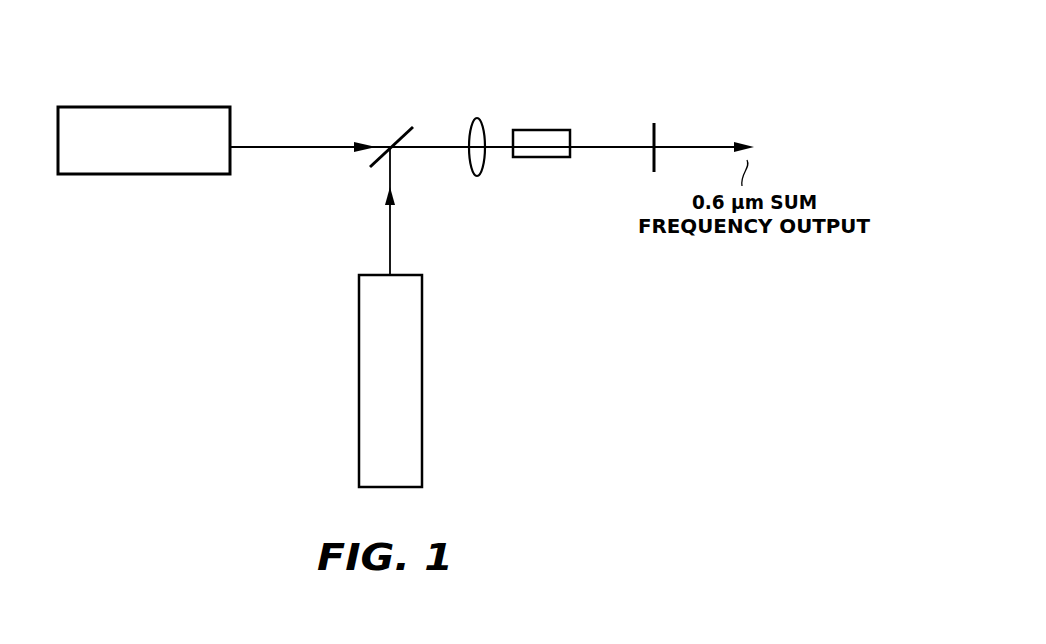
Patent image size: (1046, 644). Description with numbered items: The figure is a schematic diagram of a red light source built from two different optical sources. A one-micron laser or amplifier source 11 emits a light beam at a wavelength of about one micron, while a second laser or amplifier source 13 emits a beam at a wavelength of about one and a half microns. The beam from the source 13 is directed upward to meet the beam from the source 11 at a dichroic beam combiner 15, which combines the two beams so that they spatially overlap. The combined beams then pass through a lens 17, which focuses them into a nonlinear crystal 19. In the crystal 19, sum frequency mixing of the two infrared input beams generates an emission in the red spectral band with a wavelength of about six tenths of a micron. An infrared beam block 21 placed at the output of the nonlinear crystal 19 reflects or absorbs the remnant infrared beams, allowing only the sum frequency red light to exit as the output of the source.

The 1-micron laser or amplifier source 11 is at (130, 107).
The 1.5-micron laser or amplifier source 13 is at (422, 422).
The dichroic beam combiner 15 is at (393, 132).
The lens 17 is at (483, 120).
The nonlinear crystal 19 is at (553, 157).
The infrared beam block 21 is at (673, 104).